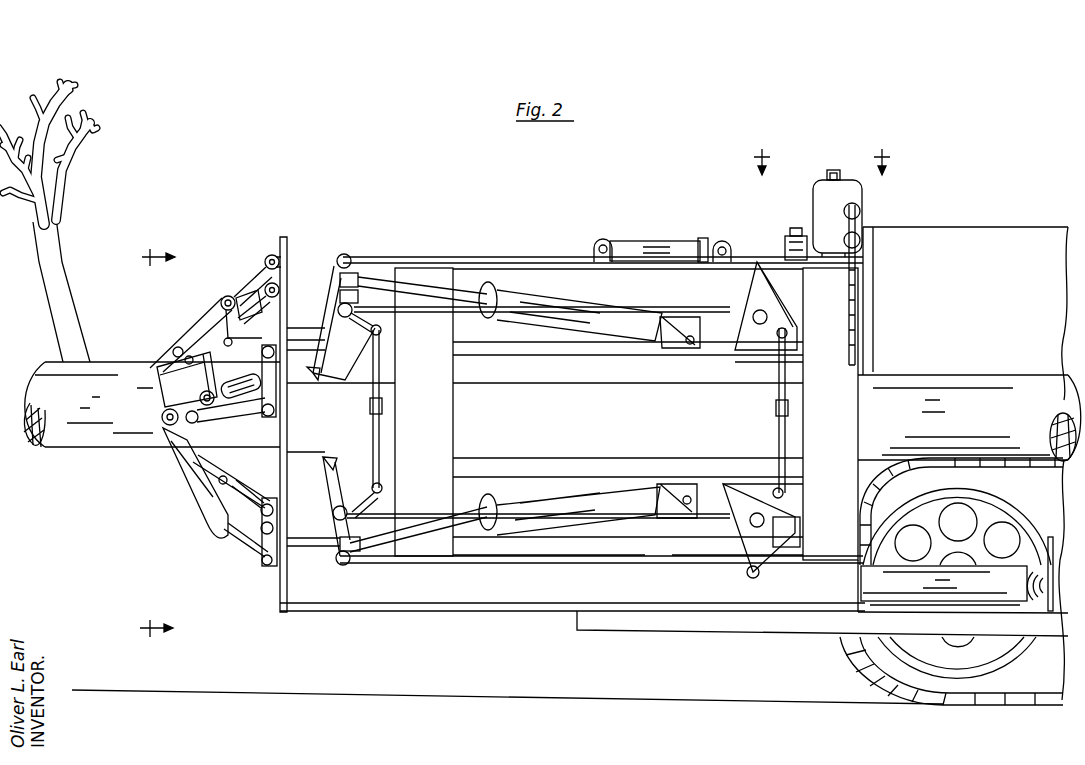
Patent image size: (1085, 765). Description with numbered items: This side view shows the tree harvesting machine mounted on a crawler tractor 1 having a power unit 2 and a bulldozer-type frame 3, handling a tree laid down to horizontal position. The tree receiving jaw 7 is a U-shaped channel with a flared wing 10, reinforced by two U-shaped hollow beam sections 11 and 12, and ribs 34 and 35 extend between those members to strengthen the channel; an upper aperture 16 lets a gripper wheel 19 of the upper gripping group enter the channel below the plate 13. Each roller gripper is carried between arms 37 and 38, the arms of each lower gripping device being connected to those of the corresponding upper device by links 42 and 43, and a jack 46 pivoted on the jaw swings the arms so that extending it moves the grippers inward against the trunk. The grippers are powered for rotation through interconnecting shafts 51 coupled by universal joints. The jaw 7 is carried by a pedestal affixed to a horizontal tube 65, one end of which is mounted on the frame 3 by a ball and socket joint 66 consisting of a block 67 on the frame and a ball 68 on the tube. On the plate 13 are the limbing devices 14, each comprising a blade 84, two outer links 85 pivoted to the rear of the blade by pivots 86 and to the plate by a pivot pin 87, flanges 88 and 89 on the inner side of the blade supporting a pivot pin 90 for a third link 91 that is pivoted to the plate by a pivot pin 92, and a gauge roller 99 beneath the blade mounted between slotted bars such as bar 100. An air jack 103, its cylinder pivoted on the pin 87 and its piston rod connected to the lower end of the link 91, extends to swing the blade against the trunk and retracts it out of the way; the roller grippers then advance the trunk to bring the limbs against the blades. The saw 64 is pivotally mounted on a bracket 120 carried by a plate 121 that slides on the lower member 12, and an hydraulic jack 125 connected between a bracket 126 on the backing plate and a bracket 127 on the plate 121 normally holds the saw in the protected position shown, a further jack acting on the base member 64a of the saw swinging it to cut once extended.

The crawler tractor 1 is at (838, 652).
The power unit 2 is at (963, 226).
The frame 3 is at (688, 631).
The tree receiving jaw 7 is at (530, 423).
The flared wing 10 is at (348, 605).
The U-shaped hollow beam section 11 is at (422, 407).
The U-shaped hollow beam section 12 is at (835, 420).
The plate 13 is at (282, 236).
The limbing device 14 is at (243, 275).
The upper aperture 16 is at (164, 444).
The gripper wheel 19 is at (822, 173).
The rib 34 is at (678, 308).
The rib 35 is at (663, 382).
The arm 37 is at (337, 257).
The arm 38 is at (358, 360).
The link 42 is at (467, 252).
The link 43 is at (431, 313).
The jack 46 is at (544, 301).
The interconnecting shaft 51 is at (370, 398).
The saw 64 is at (850, 179).
The base member 64a is at (797, 228).
The horizontal tube 65 is at (879, 564).
The ball and socket joint 66 is at (1046, 562).
The block 67 is at (1070, 607).
The ball 68 is at (1046, 605).
The blade 84 is at (188, 332).
The outer link 85 is at (265, 262).
The pivot 86 is at (223, 299).
The pivot pin 87 is at (280, 262).
The flange 88 is at (224, 335).
The flange 89 is at (222, 469).
The pivot pin 90 is at (241, 485).
The third link 91 is at (284, 306).
The pivot pin 92 is at (280, 289).
The gauge roller 99 is at (184, 359).
The bar 100 is at (176, 349).
The air jack 103 is at (252, 378).
The bracket 120 is at (786, 252).
The plate 121 is at (843, 262).
The hydraulic jack 125 is at (648, 241).
The bracket 126 is at (594, 247).
The bracket 127 is at (722, 243).